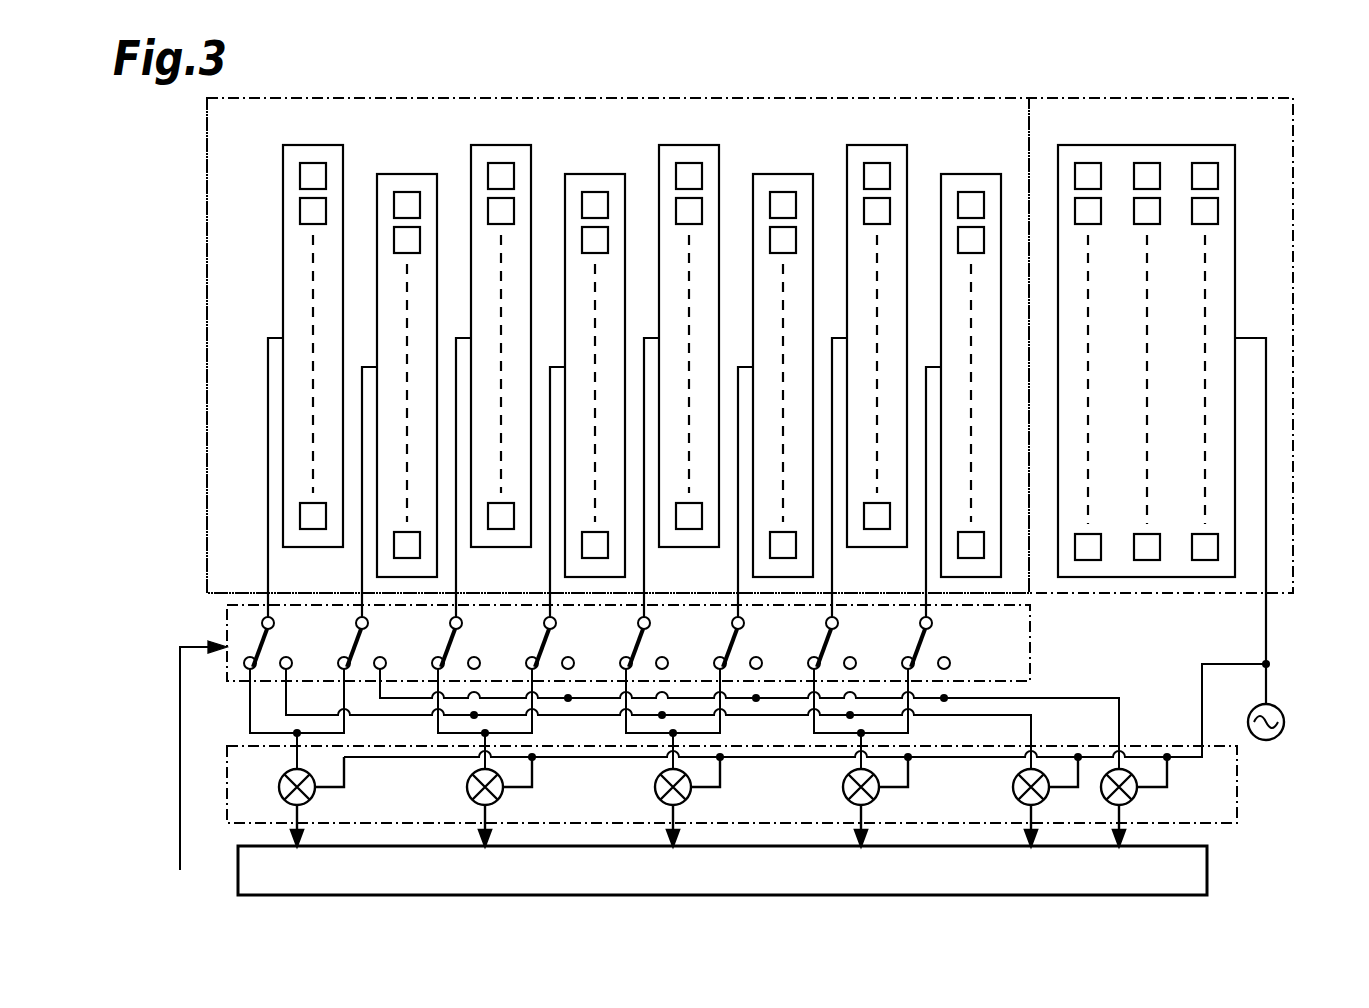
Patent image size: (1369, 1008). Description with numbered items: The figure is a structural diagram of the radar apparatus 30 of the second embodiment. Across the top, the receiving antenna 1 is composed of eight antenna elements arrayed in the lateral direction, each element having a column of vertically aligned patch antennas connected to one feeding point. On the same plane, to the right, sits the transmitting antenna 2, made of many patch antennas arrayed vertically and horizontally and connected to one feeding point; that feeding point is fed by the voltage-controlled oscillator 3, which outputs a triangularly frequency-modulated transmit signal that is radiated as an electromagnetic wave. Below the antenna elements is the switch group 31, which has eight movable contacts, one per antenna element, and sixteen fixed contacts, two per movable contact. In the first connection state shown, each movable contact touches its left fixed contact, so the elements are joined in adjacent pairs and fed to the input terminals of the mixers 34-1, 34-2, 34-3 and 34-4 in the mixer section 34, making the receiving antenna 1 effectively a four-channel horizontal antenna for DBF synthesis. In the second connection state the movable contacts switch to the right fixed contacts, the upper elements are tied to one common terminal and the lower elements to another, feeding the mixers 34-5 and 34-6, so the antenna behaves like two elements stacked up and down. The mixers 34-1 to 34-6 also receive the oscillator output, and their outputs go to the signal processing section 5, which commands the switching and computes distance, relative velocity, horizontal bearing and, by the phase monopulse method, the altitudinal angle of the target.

The receiving antenna 1 is at (207, 141).
The transmitting antenna 2 is at (1293, 428).
The voltage-controlled oscillator 3 is at (1285, 720).
The signal processing section 5 is at (1207, 875).
The radar apparatus 30 is at (1317, 181).
The switch group 31 is at (1030, 657).
The mixer section 34 is at (1237, 804).
The mixer 34-1 is at (318, 797).
The mixer 34-2 is at (506, 797).
The mixer 34-3 is at (694, 797).
The mixer 34-4 is at (880, 797).
The mixer 34-5 is at (1015, 781).
The mixer 34-6 is at (1138, 797).